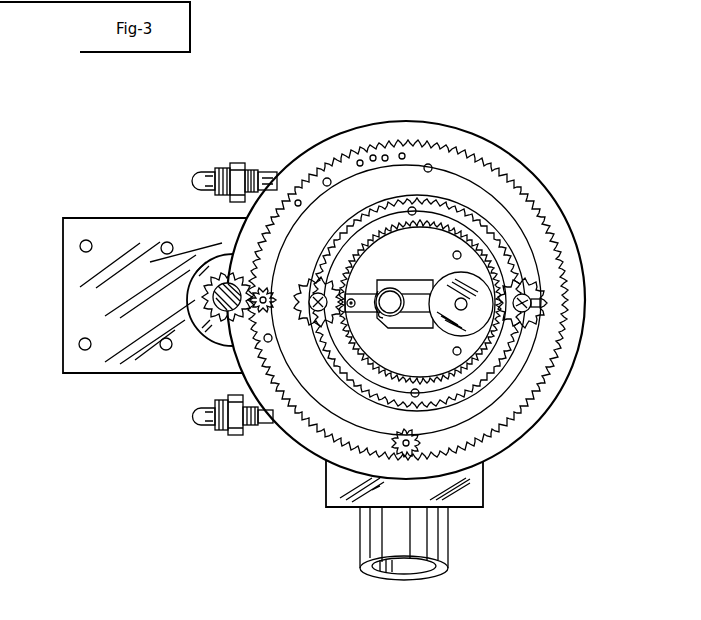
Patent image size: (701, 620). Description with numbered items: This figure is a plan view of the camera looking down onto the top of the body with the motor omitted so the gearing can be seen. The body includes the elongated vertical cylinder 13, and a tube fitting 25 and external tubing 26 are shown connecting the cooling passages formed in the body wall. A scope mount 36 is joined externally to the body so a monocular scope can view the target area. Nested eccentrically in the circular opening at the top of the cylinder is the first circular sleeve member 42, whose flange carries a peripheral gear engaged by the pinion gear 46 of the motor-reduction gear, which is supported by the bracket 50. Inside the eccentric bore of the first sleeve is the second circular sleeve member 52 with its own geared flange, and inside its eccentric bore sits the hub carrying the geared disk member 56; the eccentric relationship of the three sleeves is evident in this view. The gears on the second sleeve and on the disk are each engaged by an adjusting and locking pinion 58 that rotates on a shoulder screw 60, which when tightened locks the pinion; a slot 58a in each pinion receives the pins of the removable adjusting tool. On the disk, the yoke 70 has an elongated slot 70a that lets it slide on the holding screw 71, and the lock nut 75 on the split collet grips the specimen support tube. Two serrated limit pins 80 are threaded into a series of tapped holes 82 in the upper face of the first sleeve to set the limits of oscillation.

The vertical cylinder 13 is at (531, 430).
The tube fitting 25 is at (259, 172).
The external tubing 26 is at (194, 179).
The scope mount 36 is at (462, 515).
The first circular sleeve member 42 is at (521, 393).
The pinion gear 46 is at (214, 331).
The bracket 50 is at (63, 318).
The second circular sleeve member 52 is at (378, 388).
The disk member 56 is at (406, 362).
The adjusting and locking pinion 58 is at (322, 281).
The slot 58a is at (540, 314).
The shoulder screw 60 is at (323, 317).
The yoke 70 is at (426, 281).
The elongated slot 70a is at (393, 290).
The holding screw 71 is at (381, 312).
The lock nut 75 is at (452, 325).
The limit pin 80 is at (263, 289).
The tapped hole 82 is at (329, 178).